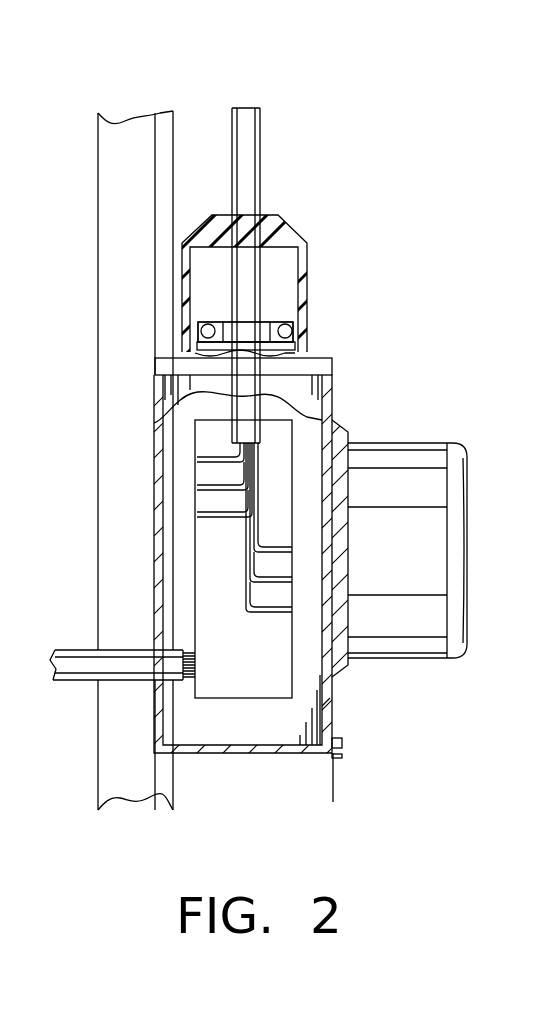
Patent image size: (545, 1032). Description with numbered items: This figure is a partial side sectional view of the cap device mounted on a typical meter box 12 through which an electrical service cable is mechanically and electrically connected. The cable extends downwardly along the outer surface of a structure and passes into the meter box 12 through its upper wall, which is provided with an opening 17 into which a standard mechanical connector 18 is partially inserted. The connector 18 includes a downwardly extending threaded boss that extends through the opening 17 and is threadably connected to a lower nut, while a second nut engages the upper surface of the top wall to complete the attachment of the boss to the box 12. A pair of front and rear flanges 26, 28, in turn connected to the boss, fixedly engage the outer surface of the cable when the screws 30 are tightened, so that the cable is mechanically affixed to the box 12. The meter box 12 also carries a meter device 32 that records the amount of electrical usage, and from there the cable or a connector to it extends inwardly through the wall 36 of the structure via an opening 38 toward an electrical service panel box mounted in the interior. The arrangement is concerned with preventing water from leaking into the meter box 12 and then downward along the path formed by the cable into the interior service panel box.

The meter box 12 is at (330, 702).
The opening 17 is at (262, 362).
The mechanical connector 18 is at (212, 320).
The front flange 26 is at (267, 325).
The rear flange 28 is at (245, 332).
The screws 30 is at (287, 325).
The meter device 32 is at (295, 503).
The wall 36 is at (113, 498).
The opening 38 is at (120, 688).